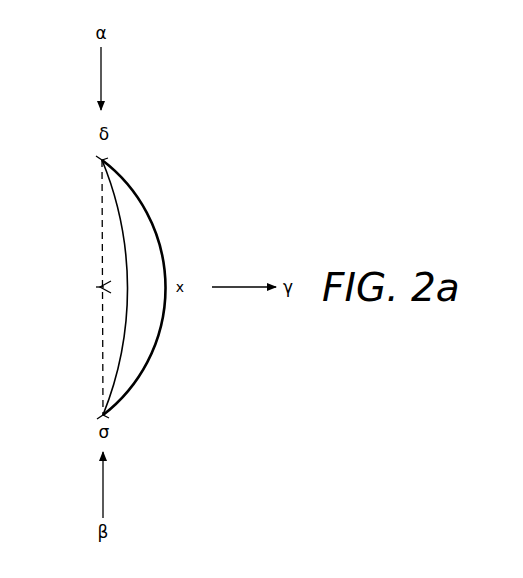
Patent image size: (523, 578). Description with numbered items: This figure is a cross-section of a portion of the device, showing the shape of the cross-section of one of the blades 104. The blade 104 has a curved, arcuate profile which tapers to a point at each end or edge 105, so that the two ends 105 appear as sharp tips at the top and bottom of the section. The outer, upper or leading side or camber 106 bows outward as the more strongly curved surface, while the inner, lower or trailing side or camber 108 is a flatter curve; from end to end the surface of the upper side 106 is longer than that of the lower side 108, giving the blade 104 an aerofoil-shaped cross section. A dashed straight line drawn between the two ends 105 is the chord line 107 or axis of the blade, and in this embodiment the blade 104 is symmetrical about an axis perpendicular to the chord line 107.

The blade 104 is at (136, 305).
The end 105 is at (102, 160).
The upper side 106 is at (153, 225).
The chord line 107 is at (101, 222).
The lower side 108 is at (124, 326).